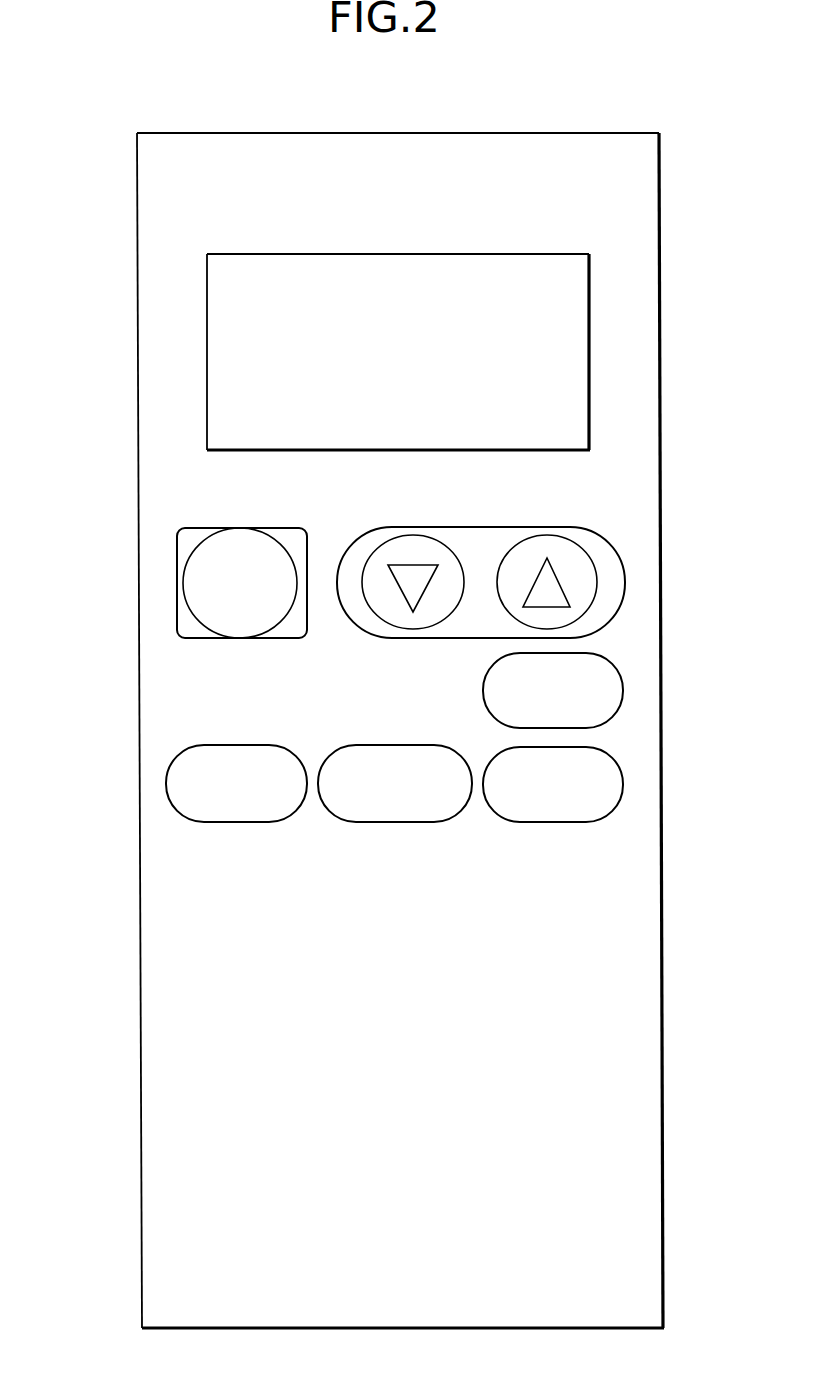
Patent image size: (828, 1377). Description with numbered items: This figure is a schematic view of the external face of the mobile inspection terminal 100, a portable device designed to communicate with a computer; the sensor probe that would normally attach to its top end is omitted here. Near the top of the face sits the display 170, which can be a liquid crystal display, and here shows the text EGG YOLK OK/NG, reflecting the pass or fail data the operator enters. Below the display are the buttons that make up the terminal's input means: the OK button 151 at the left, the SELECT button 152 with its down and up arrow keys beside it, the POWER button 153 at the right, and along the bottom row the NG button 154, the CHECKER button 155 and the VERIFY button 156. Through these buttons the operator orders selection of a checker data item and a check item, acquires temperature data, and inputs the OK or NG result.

The mobile inspection terminal 100 is at (622, 133).
The display 170 is at (558, 254).
The OK button 151 is at (177, 588).
The SELECT button 152 is at (626, 580).
The POWER button 153 is at (624, 690).
The NG button 154 is at (166, 780).
The CHECKER button 155 is at (395, 822).
The VERIFY button 156 is at (624, 785).